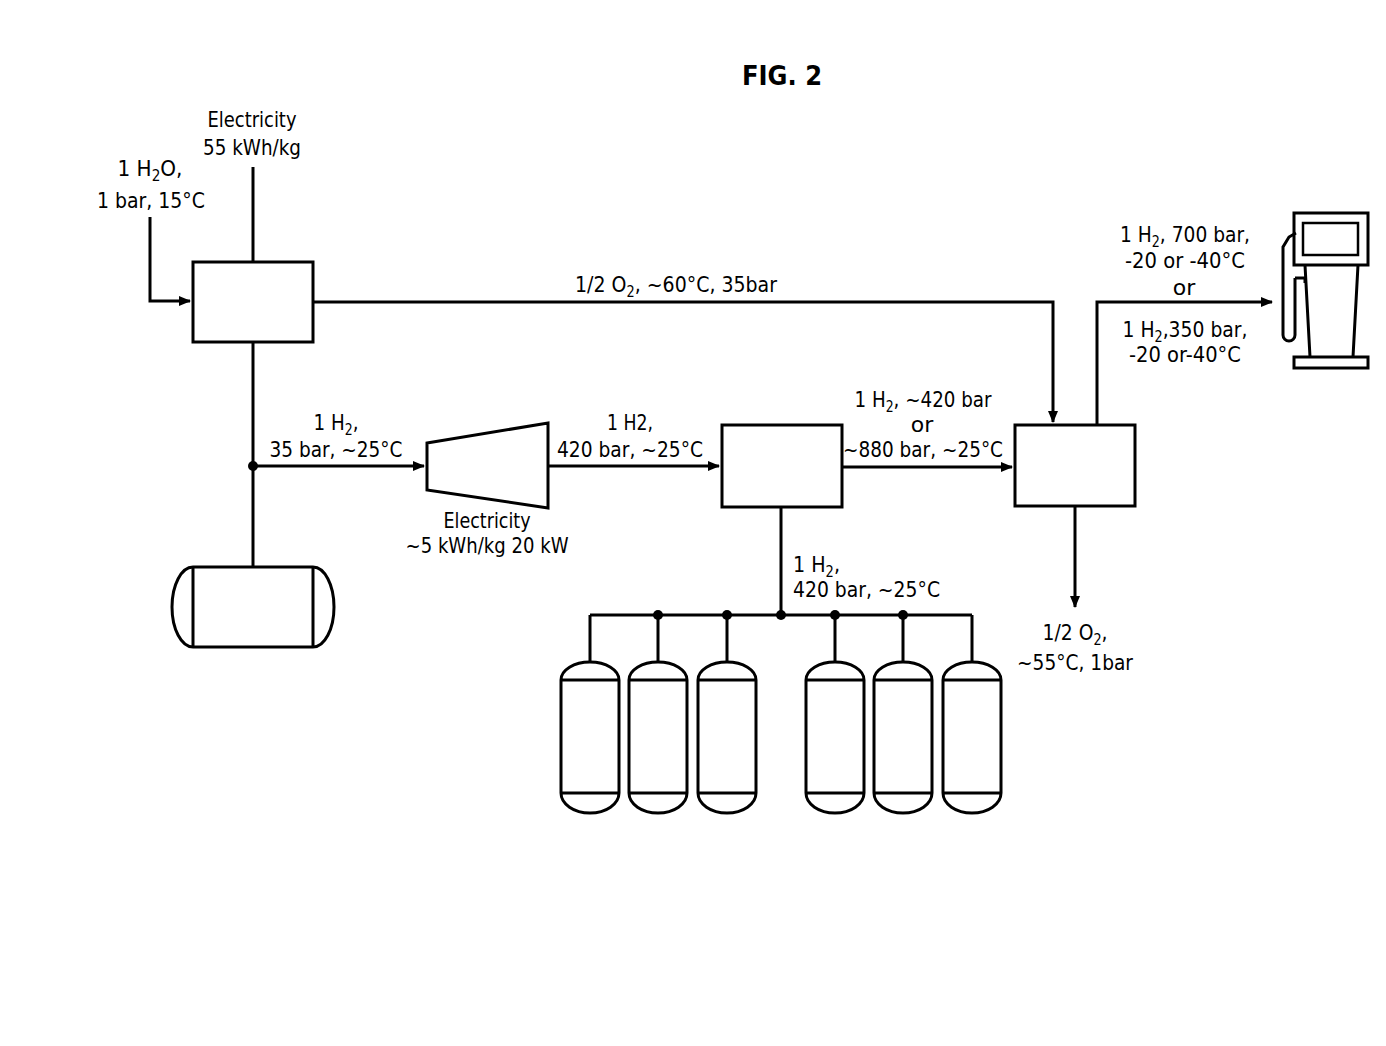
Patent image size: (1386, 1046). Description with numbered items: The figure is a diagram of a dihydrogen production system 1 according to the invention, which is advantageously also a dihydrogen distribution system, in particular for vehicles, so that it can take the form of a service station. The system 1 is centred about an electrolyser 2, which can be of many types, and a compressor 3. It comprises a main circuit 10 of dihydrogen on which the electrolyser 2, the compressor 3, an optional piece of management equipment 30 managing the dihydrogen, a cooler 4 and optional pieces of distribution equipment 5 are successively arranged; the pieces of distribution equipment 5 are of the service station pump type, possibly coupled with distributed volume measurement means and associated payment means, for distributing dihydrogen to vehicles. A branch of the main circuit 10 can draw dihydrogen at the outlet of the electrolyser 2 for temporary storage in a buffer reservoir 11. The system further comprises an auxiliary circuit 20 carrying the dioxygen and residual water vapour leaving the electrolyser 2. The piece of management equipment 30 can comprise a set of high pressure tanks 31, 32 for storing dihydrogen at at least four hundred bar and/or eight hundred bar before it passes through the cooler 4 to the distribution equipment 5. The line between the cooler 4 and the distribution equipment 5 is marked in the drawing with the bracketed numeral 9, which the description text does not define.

The dihydrogen production system 1 is at (945, 172).
The electrolyser 2 is at (246, 313).
The compressor 3 is at (480, 478).
The cooler 4 is at (1068, 478).
The pieces of distribution equipment 5 is at (1331, 213).
The hydrogen supply line to dispenser 9 is at (1184, 363).
The main circuit 10 is at (252, 398).
The buffer reservoir 11 is at (241, 618).
The auxiliary circuit 20 is at (440, 300).
The piece of management equipment 30 is at (768, 477).
The high pressure tanks 31 is at (755, 822).
The high pressure tanks 32 is at (808, 822).